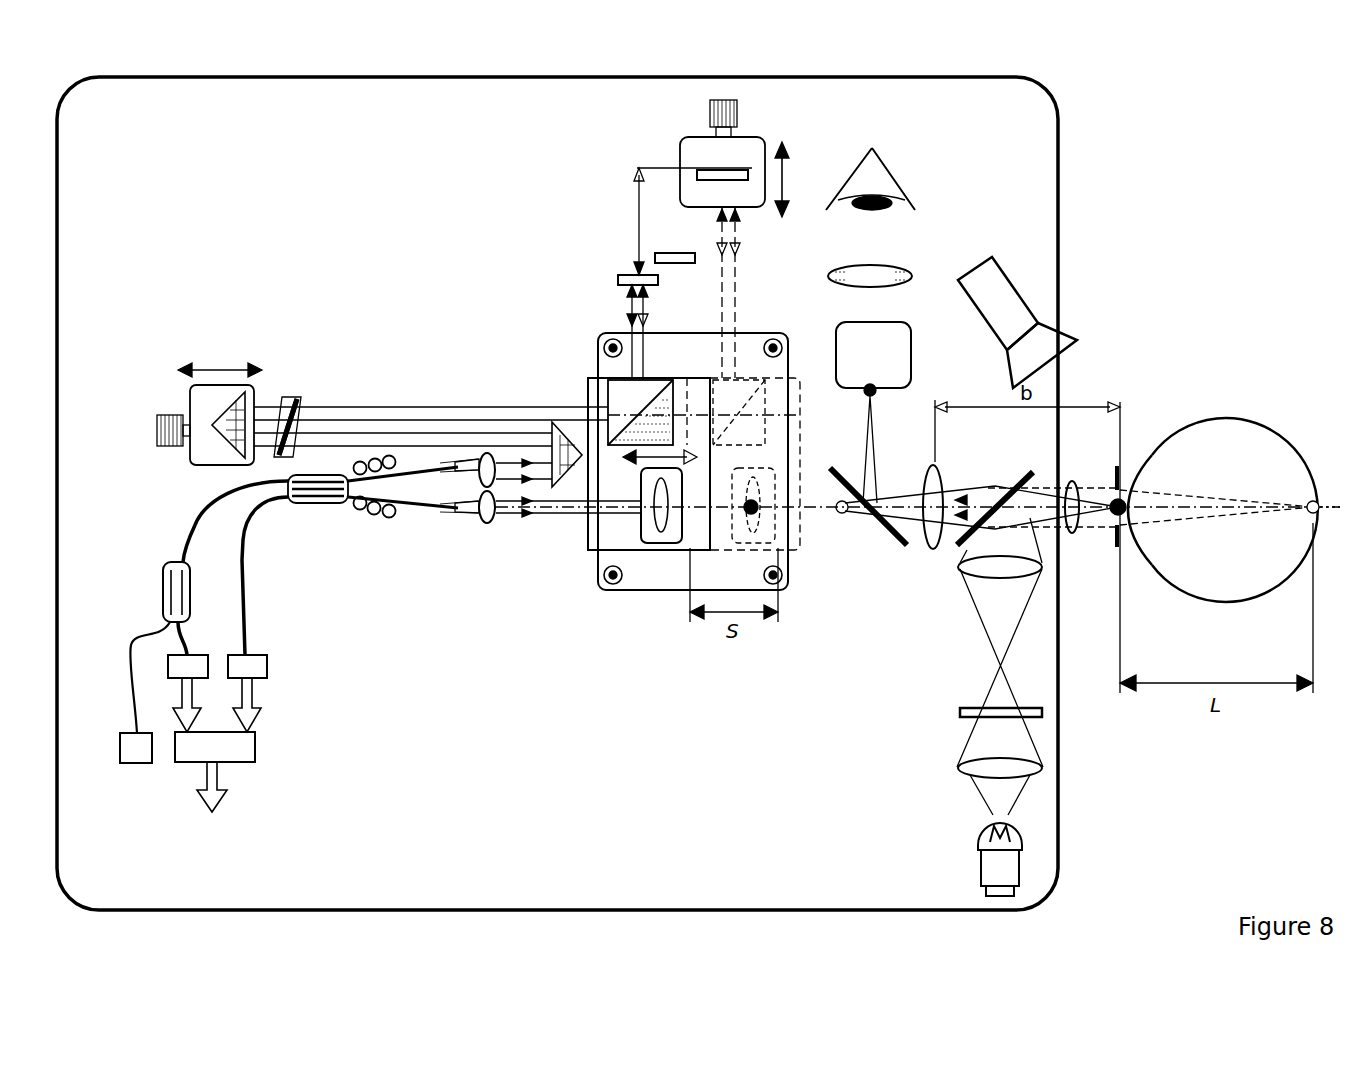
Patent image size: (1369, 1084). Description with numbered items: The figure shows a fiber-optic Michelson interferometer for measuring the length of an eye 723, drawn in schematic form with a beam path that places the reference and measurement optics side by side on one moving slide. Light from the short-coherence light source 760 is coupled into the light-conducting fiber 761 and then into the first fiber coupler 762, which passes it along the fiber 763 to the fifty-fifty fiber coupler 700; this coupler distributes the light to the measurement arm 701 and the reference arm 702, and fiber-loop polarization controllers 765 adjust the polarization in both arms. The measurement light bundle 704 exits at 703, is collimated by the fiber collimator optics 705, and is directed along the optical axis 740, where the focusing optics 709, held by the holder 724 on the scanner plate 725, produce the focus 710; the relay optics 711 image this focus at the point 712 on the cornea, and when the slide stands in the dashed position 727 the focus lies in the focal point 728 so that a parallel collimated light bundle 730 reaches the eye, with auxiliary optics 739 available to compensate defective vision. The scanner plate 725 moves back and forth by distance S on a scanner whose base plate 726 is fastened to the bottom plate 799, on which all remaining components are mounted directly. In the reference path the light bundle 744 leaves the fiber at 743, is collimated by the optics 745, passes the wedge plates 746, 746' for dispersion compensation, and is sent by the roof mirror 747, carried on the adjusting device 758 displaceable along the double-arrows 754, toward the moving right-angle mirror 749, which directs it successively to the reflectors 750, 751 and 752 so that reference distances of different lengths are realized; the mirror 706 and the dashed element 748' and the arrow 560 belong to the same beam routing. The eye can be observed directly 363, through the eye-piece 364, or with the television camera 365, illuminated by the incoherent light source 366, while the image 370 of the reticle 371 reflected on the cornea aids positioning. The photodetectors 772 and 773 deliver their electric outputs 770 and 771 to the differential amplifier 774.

The bottom plate 799 is at (1047, 192).
The adjusting device 758 is at (182, 412).
The double-arrows 754 is at (186, 383).
The roof mirror 747 is at (223, 403).
The wedge plate 746 is at (269, 392).
The wedge plate 746' is at (305, 391).
The fiber-loop polarization controllers 765 is at (350, 512).
The fiber coupler 700 is at (310, 502).
The fiber 763 is at (178, 528).
The interferometer measurement arm 701 is at (407, 507).
The fiber exit 743 is at (440, 470).
The reference light bundle 744 is at (463, 467).
The interferometer reference arm 702 is at (427, 470).
The fiber exit 703 is at (440, 507).
The fiber collimator optics 745 is at (487, 455).
The light bundle 704 is at (482, 525).
The fiber collimator optics 705 is at (495, 522).
The prism 748' is at (534, 407).
The scanner plate 725 is at (600, 340).
The holder 724 is at (692, 535).
The base plate 726 is at (612, 383).
The moving right-angle mirror 749 is at (622, 430).
The dashed-line position 727 is at (822, 415).
The focusing optics 709 is at (657, 535).
The focus 710 is at (760, 497).
The arrow direction 560 is at (637, 460).
The reflector 750 is at (622, 277).
The reflector 751 is at (688, 253).
The reflector 752 is at (748, 170).
The direct observation 363 is at (888, 196).
The eye-piece 364 is at (885, 263).
The television camera 365 is at (892, 350).
The incoherent light source 366 is at (1005, 298).
The focal point 728 is at (846, 512).
The photodetector 772 is at (903, 540).
The relay optics 711 is at (927, 480).
The parallel collimated light bundle 730 is at (985, 490).
The point 712 is at (1066, 492).
The reticle image 370 is at (1115, 467).
The auxiliary optics 739 is at (1115, 517).
The eye 723 is at (1152, 482).
The mirror 706 is at (1314, 500).
The optical axis 740 is at (1337, 513).
The reticle 371 is at (957, 716).
The first fiber coupler 762 is at (165, 592).
The light-conducting fiber 761 is at (132, 712).
The short-coherence light source 760 is at (135, 753).
The photodetector 773 is at (210, 665).
The electric output 771 is at (193, 693).
The electric output 770 is at (257, 722).
The differential amplifier 774 is at (240, 753).